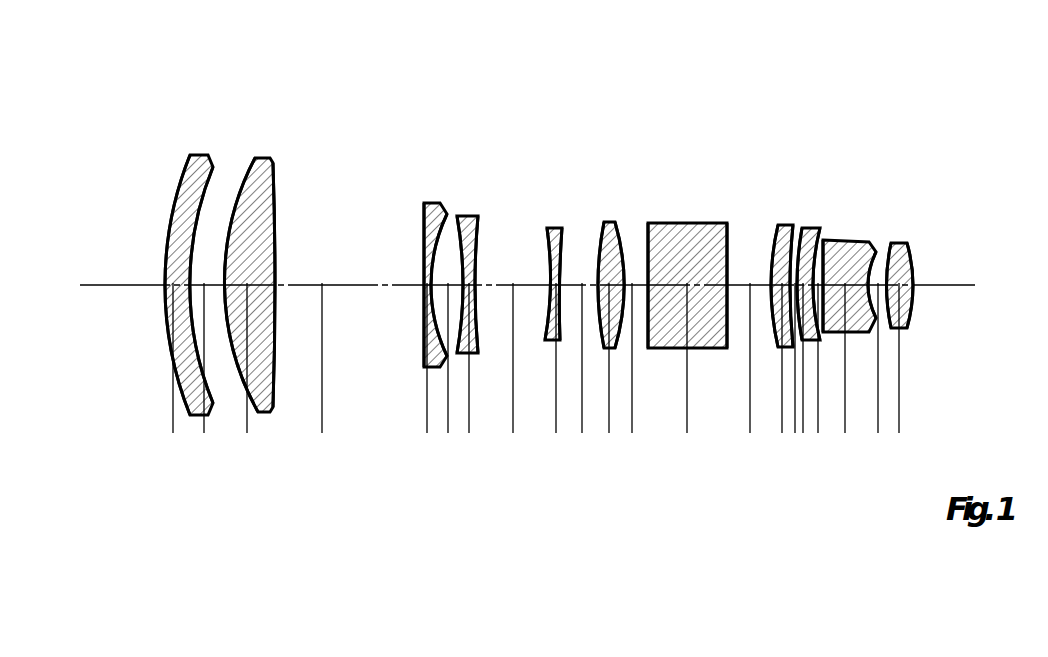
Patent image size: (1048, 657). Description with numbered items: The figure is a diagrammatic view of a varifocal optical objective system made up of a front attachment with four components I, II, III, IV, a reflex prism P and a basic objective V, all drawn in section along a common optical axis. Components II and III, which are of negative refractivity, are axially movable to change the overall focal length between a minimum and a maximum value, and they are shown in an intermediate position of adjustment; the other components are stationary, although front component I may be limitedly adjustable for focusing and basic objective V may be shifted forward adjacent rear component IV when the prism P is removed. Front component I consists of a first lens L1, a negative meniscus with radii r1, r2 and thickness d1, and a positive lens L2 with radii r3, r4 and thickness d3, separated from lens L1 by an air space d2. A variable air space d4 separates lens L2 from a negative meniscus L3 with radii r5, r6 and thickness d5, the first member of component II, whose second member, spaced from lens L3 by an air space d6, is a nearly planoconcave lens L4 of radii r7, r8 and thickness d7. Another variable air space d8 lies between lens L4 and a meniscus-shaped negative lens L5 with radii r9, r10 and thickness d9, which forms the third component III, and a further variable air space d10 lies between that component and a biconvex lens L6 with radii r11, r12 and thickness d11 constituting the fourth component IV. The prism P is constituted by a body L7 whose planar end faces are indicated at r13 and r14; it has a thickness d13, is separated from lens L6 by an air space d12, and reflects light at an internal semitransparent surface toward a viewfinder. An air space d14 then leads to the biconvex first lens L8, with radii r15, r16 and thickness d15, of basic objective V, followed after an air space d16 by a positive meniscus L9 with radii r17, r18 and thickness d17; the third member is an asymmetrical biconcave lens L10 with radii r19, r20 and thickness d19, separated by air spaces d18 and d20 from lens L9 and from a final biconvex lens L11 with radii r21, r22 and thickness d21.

The front component I is at (186, 325).
The second component II is at (386, 325).
The third component III is at (484, 325).
The fourth component IV is at (540, 325).
The reflex prism P is at (619, 325).
The basic objective V is at (763, 325).
The first lens L1 is at (155, 305).
The positive lens L2 is at (211, 305).
The negative meniscus L3 is at (370, 305).
The nearly planoconcave lens L4 is at (412, 305).
The negative lens L5 is at (484, 305).
The biconvex lens L6 is at (540, 305).
The prism body L7 is at (619, 305).
The biconvex first lens L8 is at (700, 305).
The positive meniscus L9 is at (741, 305).
The asymmetrical biconcave lens L10 is at (796, 305).
The final lens L11 is at (851, 305).
The radius of lens L1 r1 is at (175, 192).
The radius of lens L1 r2 is at (203, 198).
The radius of lens L2 r3 is at (203, 150).
The radius of lens L2 r4 is at (235, 207).
The radius of lens L3 r5 is at (422, 273).
The radius of lens L3 r6 is at (437, 257).
The radius of lens L4 r7 is at (460, 228).
The radius of lens L4 r8 is at (480, 240).
The radius of lens L5 r9 is at (545, 302).
The radius of lens L5 r10 is at (565, 295).
The radius of lens L6 r11 is at (598, 290).
The radius of lens L6 r12 is at (625, 290).
The planar end face of prism body r13 is at (645, 277).
The planar end face of prism body r14 is at (729, 295).
The radius of lens L8 r15 is at (772, 258).
The radius of lens L8 r16 is at (770, 303).
The radius of lens L9 r17 is at (798, 262).
The radius of lens L9 r18 is at (815, 250).
The radius of lens L10 r19 is at (825, 240).
The radius of lens L10 r20 is at (874, 250).
The radius of lens L11 r21 is at (888, 243).
The radius of lens L11 r22 is at (913, 268).
The thickness of lens L1 d1 is at (173, 433).
The air space d2 is at (204, 433).
The thickness of lens L2 d3 is at (247, 433).
The variable air space d4 is at (322, 433).
The thickness of lens L3 d5 is at (427, 433).
The air space d6 is at (448, 433).
The thickness of lens L4 d7 is at (469, 433).
The variable air space d8 is at (513, 433).
The thickness of lens L5 d9 is at (556, 433).
The variable air space d10 is at (582, 433).
The thickness of lens L6 d11 is at (609, 433).
The air space d12 is at (632, 433).
The thickness of prism body d13 is at (687, 433).
The air space d14 is at (750, 433).
The thickness of lens L8 d15 is at (782, 433).
The air space d16 is at (795, 433).
The thickness of lens L9 d17 is at (803, 433).
The air space d18 is at (818, 433).
The thickness of lens L10 d19 is at (845, 433).
The air space d20 is at (878, 433).
The thickness of lens L11 d21 is at (899, 433).